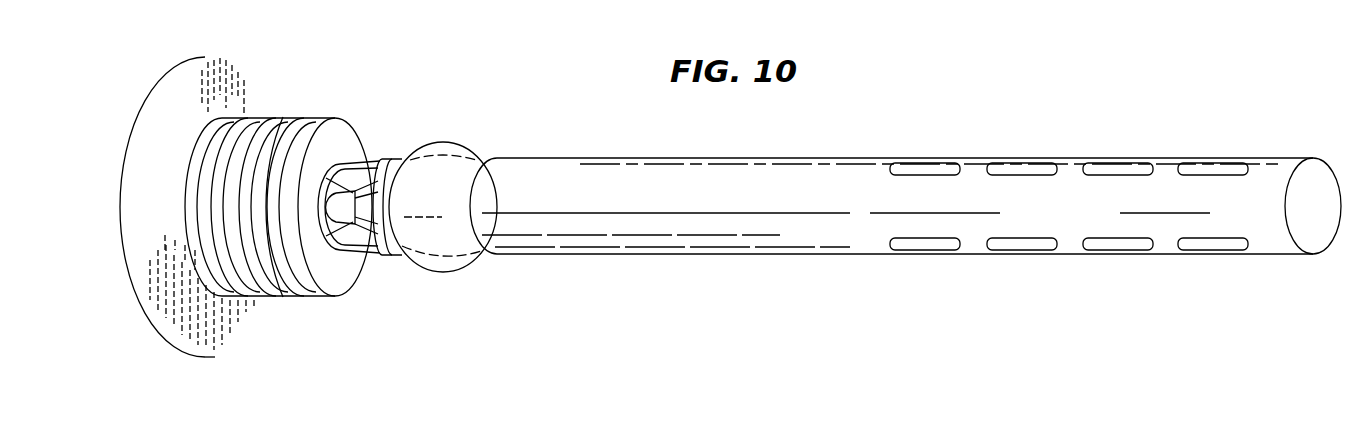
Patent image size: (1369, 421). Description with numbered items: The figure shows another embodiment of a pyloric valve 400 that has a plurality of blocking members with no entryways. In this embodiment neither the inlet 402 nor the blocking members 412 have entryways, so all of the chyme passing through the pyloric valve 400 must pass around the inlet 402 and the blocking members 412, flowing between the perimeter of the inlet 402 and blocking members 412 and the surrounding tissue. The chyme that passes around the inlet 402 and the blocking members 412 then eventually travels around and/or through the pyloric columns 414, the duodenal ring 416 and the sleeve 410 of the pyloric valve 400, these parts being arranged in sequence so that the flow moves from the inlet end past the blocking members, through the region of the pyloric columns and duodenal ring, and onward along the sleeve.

The pyloric valve 400 is at (396, 70).
The inlet 402 is at (183, 98).
The sleeve 410 is at (714, 158).
The blocking members 412 is at (345, 106).
The pyloric columns 414 is at (358, 252).
The duodenal ring 416 is at (447, 170).